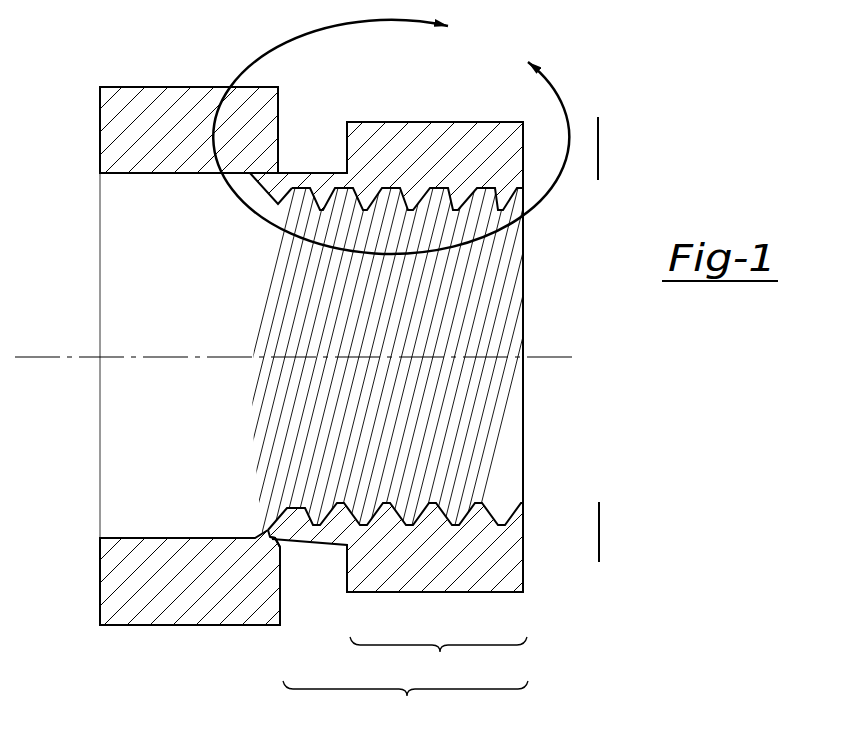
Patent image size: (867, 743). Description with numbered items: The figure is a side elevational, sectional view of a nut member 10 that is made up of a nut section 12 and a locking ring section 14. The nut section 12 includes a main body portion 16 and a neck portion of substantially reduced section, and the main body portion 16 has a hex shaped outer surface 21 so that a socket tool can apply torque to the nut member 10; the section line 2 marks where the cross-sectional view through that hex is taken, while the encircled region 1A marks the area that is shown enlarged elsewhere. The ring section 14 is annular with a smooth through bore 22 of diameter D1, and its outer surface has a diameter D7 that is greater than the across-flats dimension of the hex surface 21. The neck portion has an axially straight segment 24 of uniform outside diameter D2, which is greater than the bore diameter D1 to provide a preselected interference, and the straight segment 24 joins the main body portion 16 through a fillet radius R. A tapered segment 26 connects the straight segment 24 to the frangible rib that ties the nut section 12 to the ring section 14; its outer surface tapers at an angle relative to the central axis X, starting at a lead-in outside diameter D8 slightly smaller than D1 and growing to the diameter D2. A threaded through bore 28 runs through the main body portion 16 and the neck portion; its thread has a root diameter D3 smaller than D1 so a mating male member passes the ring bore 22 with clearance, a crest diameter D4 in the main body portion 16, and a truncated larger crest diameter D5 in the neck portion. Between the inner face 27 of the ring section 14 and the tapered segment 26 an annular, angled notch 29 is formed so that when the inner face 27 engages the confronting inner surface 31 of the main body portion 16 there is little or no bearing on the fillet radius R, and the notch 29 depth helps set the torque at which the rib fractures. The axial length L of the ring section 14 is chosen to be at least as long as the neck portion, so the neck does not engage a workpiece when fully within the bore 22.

The nut member 10 is at (555, 50).
The nut section 12 is at (405, 705).
The locking ring section 14 is at (110, 87).
The main body portion 16 is at (438, 660).
The hex shaped outer surface 21 is at (445, 122).
The through bore 22 is at (205, 538).
The straight segment 24 is at (328, 170).
The tapered segment 26 is at (283, 172).
The inner face of the ring section 27 is at (279, 88).
The threaded through bore 28 is at (510, 435).
The notch 29 is at (272, 540).
The inner surface of the main body portion 31 is at (349, 125).
The central axis X is at (566, 358).
The fillet radius R is at (345, 550).
The axial length of the ring section L is at (102, 635).
The diameter of the ring bore D1 is at (128, 538).
The outside diameter of the straight segment D2 is at (325, 541).
The root diameter of the thread D3 is at (455, 525).
The crest diameter of the thread in the main body portion D4 is at (456, 210).
The truncated crest diameter in the neck portion D5 is at (278, 203).
The diameter of the outer surface of the ring section D7 is at (170, 625).
The lead-in outside diameter of the tapered segment D8 is at (268, 535).
The section line 2- 2 is at (601, 145).
The detail area 1A is at (391, 131).